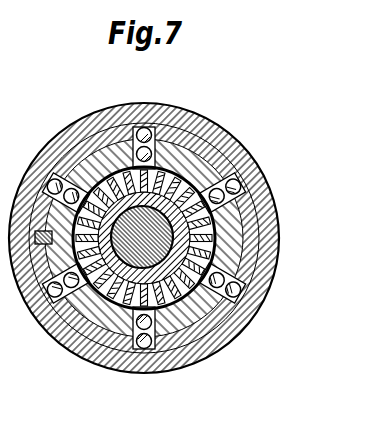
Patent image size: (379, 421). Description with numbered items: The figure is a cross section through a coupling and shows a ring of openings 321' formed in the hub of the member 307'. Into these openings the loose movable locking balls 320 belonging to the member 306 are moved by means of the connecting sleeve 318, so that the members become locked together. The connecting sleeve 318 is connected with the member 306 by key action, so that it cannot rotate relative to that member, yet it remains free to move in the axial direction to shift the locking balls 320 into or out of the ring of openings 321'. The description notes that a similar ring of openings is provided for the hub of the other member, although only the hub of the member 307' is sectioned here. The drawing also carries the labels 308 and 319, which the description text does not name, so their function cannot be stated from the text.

The member 306 is at (234, 241).
The member 307' is at (201, 238).
The housing 308 is at (93, 358).
The connecting sleeve 318 is at (62, 140).
The inner ball 319 is at (242, 201).
The loose movable locking balls 320 is at (138, 132).
The ring of openings 321' is at (143, 260).